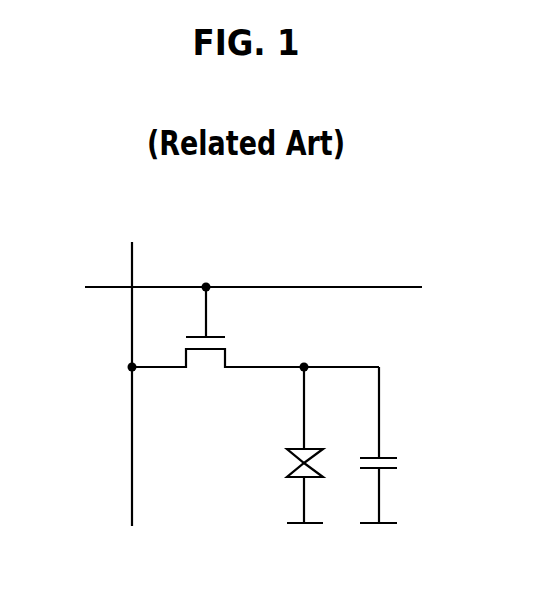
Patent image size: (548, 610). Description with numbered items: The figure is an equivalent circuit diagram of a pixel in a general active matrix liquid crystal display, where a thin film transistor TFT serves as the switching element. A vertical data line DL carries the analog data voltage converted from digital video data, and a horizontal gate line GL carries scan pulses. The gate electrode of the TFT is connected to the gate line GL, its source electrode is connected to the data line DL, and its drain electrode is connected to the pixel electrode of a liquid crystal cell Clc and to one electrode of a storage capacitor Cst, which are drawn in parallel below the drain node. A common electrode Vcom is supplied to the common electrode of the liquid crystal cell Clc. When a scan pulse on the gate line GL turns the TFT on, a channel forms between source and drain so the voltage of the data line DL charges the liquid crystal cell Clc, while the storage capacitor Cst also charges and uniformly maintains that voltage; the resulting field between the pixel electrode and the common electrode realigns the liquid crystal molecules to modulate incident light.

The data line DL is at (134, 372).
The gate line GL is at (239, 290).
The thin film transistor TFT is at (254, 341).
The liquid crystal cell Clc is at (285, 443).
The storage capacitor Cst is at (398, 445).
The common electrode Vcom is at (305, 538).